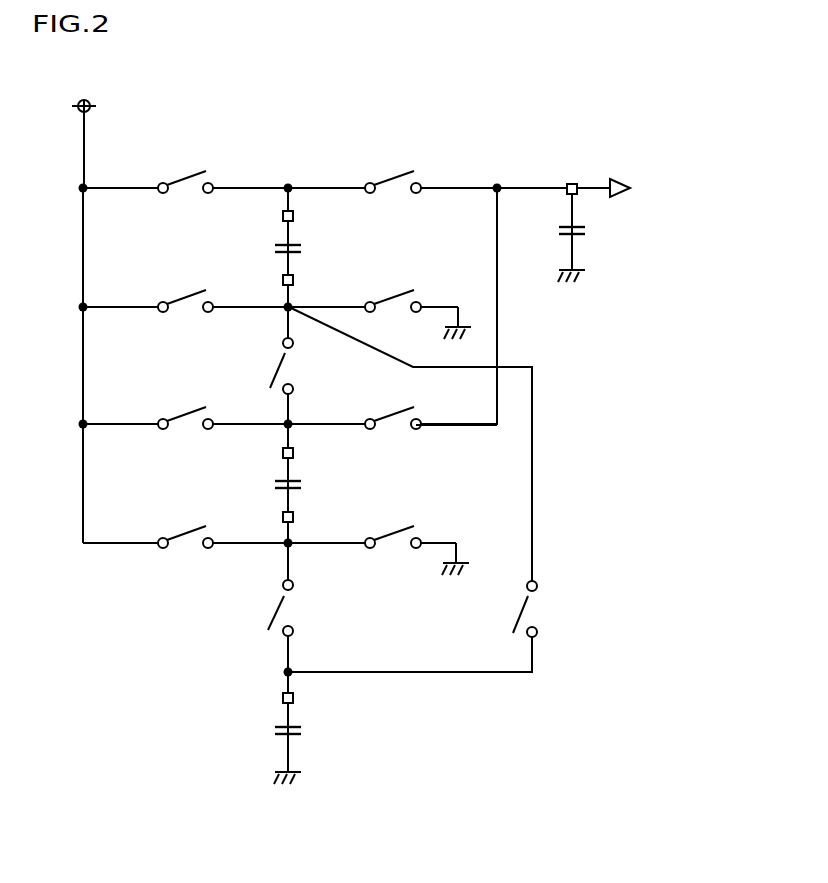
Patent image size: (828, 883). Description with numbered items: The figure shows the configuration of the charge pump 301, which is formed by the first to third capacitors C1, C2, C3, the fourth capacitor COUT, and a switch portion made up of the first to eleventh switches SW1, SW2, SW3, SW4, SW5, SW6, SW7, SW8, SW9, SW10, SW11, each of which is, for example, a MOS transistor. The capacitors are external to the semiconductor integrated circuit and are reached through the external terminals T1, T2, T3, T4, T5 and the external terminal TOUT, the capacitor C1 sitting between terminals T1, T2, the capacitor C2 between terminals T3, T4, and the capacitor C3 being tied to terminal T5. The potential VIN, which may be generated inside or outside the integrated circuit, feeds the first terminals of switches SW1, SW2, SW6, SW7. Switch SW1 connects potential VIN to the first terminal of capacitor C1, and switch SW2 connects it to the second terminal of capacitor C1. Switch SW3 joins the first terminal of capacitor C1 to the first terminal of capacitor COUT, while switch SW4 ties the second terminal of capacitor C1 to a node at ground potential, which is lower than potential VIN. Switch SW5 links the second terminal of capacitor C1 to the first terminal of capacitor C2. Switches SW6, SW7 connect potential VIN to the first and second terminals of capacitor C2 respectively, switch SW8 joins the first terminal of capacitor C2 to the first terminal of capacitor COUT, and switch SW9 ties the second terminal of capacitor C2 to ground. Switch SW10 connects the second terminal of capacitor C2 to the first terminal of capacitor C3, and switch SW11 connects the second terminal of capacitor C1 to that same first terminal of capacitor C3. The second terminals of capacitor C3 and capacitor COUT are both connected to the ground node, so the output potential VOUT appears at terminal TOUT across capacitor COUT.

The first switch SW1 is at (186, 175).
The second switch SW2 is at (186, 294).
The third switch SW3 is at (393, 175).
The fourth switch SW4 is at (393, 294).
The fifth switch SW5 is at (276, 357).
The sixth switch SW6 is at (186, 411).
The seventh switch SW7 is at (186, 530).
The eighth switch SW8 is at (393, 411).
The ninth switch SW9 is at (393, 530).
The tenth switch SW10 is at (272, 606).
The eleventh switch SW11 is at (518, 606).
The external terminal T1 is at (282, 215).
The external terminal T2 is at (282, 279).
The external terminal T3 is at (282, 452).
The external terminal T4 is at (282, 516).
The external terminal T5 is at (282, 697).
The first capacitor C1 is at (275, 246).
The second capacitor C2 is at (275, 482).
The third capacitor C3 is at (273, 728).
The external terminal TOUT is at (573, 183).
The output potential VOUT is at (655, 192).
The fourth capacitor COUT is at (580, 236).
The potential VIN is at (86, 129).
The charge pump 301 is at (702, 71).